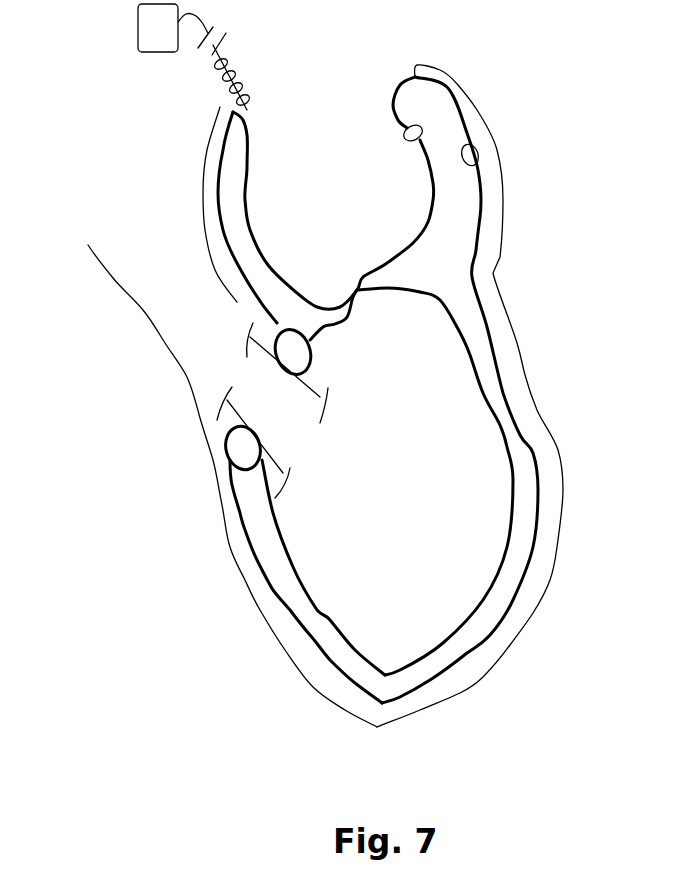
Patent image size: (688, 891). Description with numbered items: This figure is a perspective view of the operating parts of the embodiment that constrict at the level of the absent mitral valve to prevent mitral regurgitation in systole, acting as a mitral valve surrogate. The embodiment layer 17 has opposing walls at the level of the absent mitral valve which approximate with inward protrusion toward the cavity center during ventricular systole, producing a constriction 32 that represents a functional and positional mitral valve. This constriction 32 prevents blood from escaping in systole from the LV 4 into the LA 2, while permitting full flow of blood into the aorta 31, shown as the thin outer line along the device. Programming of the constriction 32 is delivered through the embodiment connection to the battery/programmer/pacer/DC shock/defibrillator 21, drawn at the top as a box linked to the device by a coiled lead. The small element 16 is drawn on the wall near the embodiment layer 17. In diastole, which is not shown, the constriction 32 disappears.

The battery/programmer/pacer/DC shock/defibrillator 21 is at (150, 30).
The embodiment layer 17 is at (430, 129).
The electrode 16 is at (485, 155).
The LA 2 is at (360, 207).
The constriction 32 is at (384, 280).
The LV 4 is at (429, 477).
The aorta 31 is at (158, 310).